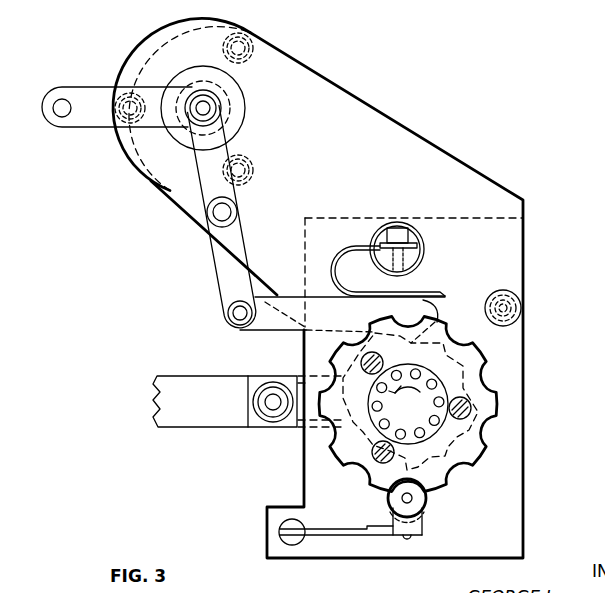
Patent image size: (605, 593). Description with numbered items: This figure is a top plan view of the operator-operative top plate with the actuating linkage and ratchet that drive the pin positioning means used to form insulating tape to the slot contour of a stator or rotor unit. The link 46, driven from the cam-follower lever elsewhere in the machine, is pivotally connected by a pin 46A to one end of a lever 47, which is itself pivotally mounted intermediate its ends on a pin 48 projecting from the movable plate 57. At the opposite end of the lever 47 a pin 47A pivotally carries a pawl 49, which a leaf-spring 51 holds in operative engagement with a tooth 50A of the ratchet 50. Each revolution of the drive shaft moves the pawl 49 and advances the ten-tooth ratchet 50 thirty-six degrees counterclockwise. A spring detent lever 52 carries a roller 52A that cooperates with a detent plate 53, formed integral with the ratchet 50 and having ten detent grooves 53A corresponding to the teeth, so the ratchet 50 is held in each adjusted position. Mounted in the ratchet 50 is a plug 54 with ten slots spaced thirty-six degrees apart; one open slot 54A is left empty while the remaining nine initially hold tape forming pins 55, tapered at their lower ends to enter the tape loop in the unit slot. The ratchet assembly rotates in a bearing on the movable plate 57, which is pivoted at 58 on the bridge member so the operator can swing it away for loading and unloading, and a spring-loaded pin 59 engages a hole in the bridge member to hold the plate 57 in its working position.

The link 46 is at (87, 92).
The pin 46A is at (200, 104).
The lever 47 is at (198, 170).
The pin 47A is at (231, 326).
The pin 48 is at (237, 211).
The pawl 49 is at (302, 296).
The ratchet 50 is at (475, 372).
The tooth 50A is at (448, 321).
The leaf-spring 51 is at (400, 295).
The spring detent lever 52 is at (332, 536).
The roller 52A is at (427, 500).
The detent plate 53 is at (498, 409).
The detent grooves 53A is at (450, 475).
The plug 54 is at (419, 415).
The open slot 54A is at (372, 405).
The tape forming pins 55 is at (384, 383).
The movable plate 57 is at (428, 142).
The pivot 58 is at (245, 108).
The spring-loaded pin 59 is at (500, 300).